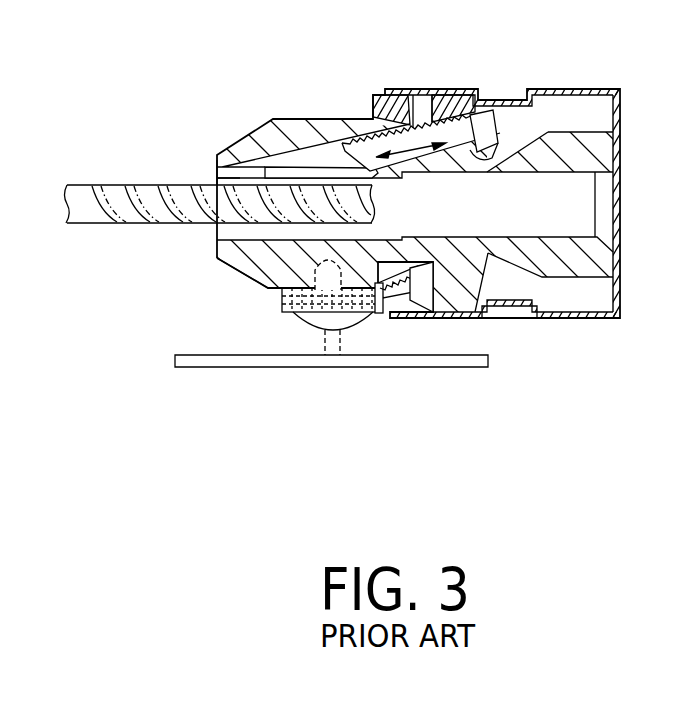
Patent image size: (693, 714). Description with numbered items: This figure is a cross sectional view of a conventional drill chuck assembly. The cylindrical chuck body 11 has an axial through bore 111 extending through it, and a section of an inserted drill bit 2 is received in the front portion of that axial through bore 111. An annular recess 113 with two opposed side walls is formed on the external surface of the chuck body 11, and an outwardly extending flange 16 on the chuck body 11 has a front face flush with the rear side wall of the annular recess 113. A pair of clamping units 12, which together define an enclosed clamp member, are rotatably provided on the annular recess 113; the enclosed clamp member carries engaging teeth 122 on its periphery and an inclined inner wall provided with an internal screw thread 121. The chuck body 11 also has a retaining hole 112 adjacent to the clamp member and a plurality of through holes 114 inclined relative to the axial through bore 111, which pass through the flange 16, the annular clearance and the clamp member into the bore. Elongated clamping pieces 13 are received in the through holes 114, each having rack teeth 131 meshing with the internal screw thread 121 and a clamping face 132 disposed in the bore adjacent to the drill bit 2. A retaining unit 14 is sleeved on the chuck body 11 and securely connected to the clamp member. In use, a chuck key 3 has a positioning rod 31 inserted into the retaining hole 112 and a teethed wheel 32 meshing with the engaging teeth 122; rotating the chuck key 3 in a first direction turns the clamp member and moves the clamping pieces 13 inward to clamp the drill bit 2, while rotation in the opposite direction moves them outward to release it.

The drill bit 2 is at (128, 224).
The chuck key 3 is at (313, 383).
The chuck body 11 is at (317, 128).
The clamping units 12 is at (408, 130).
The clamping pieces 13 is at (508, 92).
The retaining unit 14 is at (621, 116).
The outwardly extending flange 16 is at (458, 304).
The positioning rod 31 is at (281, 299).
The teethed wheel 32 is at (293, 313).
The axial through bore 111 is at (218, 175).
The retaining hole 112 is at (218, 254).
The annular recess 113 is at (433, 314).
The through holes 114 is at (487, 157).
The internal screw thread 121 is at (423, 100).
The engaging teeth 122 is at (380, 314).
The rack teeth 131 is at (458, 115).
The clamping face 132 is at (288, 172).